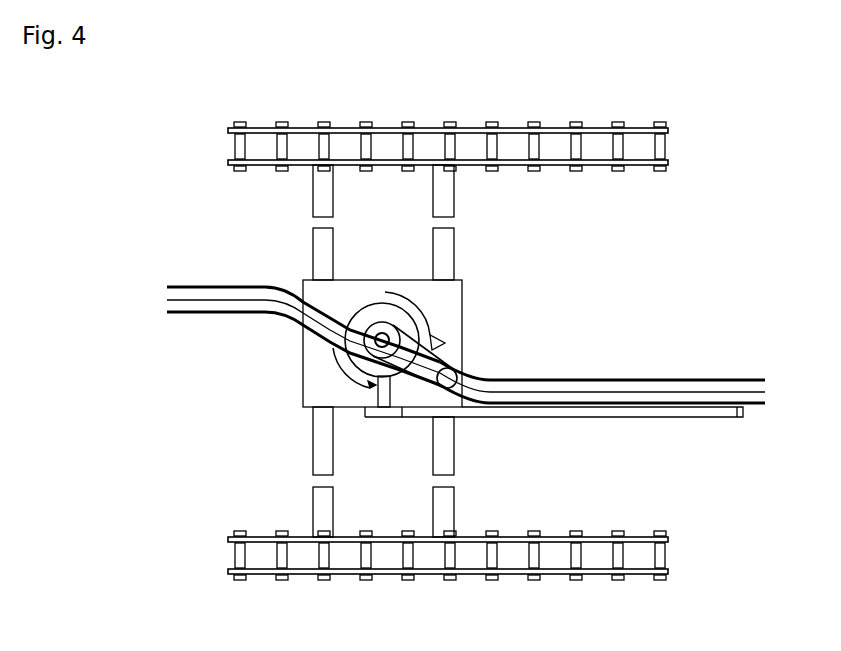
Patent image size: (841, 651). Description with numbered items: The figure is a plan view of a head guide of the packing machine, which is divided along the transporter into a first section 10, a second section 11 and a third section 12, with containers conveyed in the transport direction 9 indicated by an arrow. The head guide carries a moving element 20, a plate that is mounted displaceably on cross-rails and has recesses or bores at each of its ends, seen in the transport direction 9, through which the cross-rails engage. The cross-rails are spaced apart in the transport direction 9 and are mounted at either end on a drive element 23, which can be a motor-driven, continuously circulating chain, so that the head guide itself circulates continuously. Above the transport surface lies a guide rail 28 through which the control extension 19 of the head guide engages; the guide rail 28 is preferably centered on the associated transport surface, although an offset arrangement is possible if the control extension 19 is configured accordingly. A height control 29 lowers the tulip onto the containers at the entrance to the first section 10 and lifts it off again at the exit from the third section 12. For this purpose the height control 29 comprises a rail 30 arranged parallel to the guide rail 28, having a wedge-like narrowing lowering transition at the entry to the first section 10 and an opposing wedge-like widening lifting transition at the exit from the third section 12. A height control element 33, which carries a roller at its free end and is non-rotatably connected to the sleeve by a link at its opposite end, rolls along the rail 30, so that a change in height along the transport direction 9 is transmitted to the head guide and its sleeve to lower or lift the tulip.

The transport direction 9 is at (615, 260).
The first section 10 is at (303, 323).
The second section 11 is at (382, 351).
The third section 12 is at (602, 374).
The control extension 19 is at (472, 394).
The moving element 20 is at (445, 312).
The drive element 23 is at (578, 133).
The guide rail 28 is at (763, 366).
The height control 29 is at (658, 439).
The rail 30 is at (693, 424).
The height control element 33 is at (366, 399).